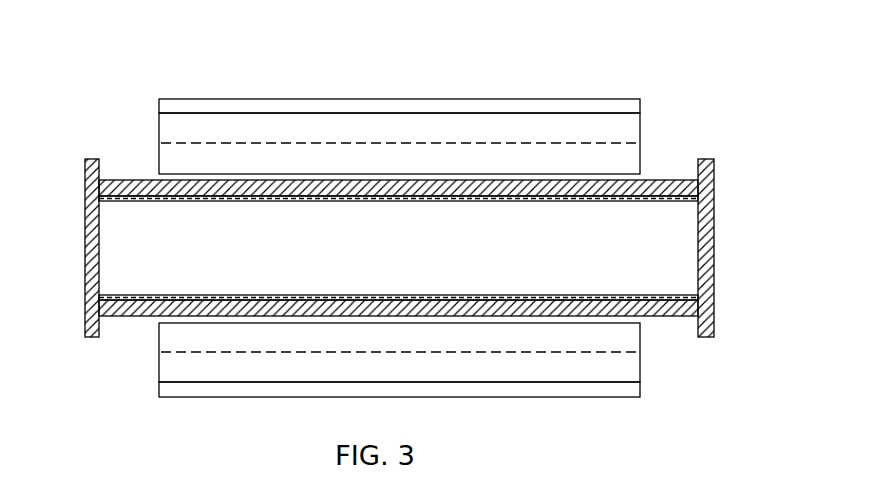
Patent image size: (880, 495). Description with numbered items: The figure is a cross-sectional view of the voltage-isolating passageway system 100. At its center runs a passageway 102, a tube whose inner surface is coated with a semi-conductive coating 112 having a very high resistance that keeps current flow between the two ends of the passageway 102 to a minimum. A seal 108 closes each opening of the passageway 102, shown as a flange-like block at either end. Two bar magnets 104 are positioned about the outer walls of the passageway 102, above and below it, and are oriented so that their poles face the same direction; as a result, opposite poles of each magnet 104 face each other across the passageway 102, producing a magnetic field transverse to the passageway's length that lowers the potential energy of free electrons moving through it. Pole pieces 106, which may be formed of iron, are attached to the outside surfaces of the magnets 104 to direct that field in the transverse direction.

The voltage-isolating passageway system 100 is at (583, 39).
The passageway 102 is at (130, 180).
The magnets 104 is at (648, 113).
The pole pieces 106 is at (642, 108).
The seal 108 is at (85, 180).
The semi-conductive coating 112 is at (602, 201).